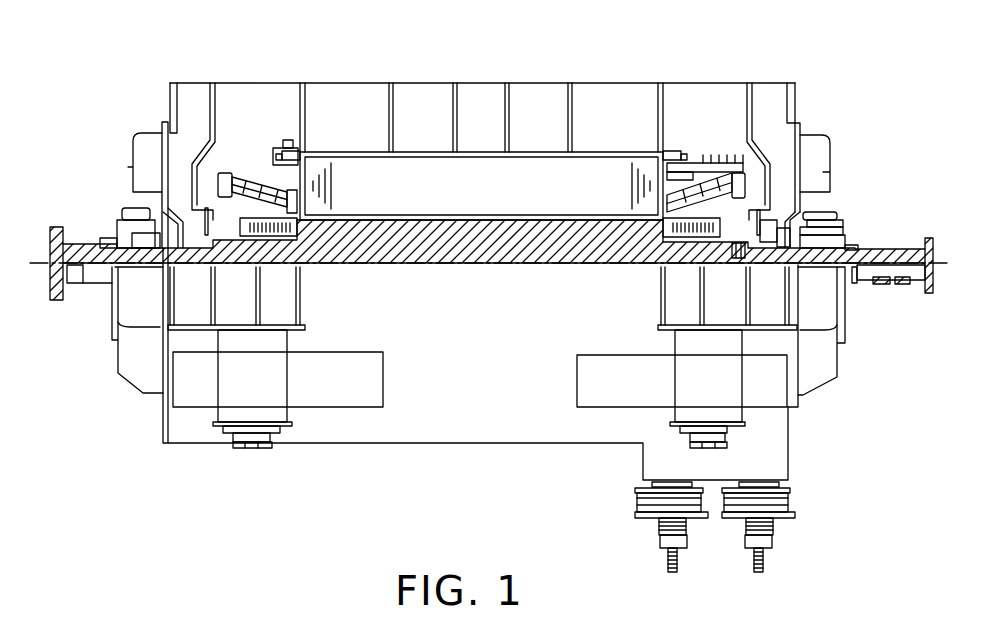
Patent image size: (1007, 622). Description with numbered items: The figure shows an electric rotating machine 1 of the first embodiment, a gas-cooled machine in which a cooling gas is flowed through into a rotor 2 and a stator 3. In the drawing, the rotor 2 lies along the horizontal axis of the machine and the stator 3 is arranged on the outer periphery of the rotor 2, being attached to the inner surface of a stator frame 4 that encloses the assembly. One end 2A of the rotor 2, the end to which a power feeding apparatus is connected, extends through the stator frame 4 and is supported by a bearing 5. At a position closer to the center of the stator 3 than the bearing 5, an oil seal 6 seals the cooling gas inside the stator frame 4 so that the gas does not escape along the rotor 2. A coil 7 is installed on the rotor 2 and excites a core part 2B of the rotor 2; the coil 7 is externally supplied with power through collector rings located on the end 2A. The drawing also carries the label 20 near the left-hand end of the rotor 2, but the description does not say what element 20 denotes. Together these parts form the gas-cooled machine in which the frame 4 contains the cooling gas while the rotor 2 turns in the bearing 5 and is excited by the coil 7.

The electric rotating machine 1 is at (817, 92).
The rotor 2 is at (55, 226).
The end of the rotor 2A is at (905, 250).
The core part of the rotor 2B is at (594, 230).
The stator 3 is at (422, 182).
The stator frame 4 is at (475, 83).
The bearing 5 is at (827, 231).
The oil seal 6 is at (803, 232).
The coil 7 is at (708, 220).
The bearing unit 20 is at (97, 244).